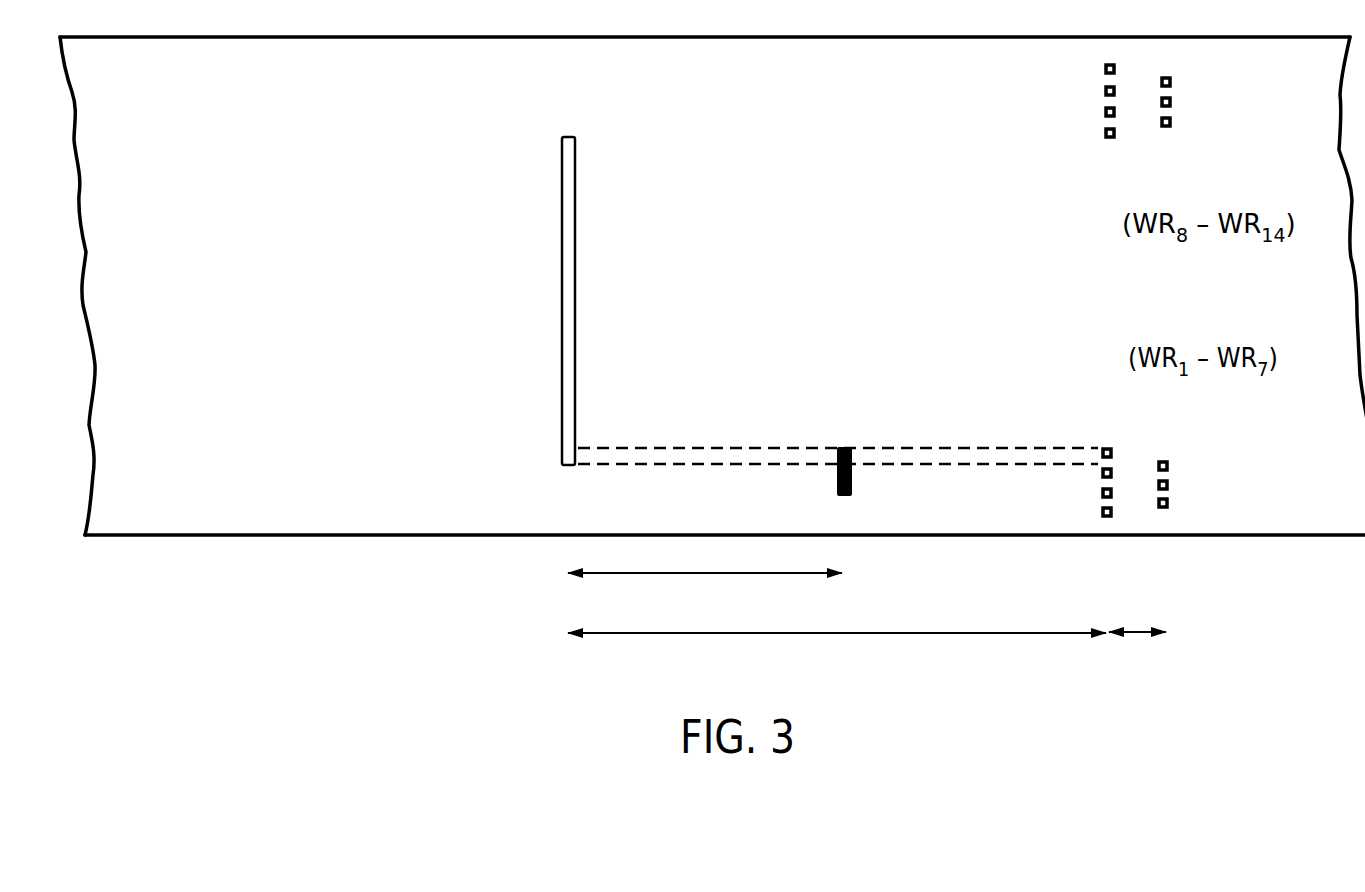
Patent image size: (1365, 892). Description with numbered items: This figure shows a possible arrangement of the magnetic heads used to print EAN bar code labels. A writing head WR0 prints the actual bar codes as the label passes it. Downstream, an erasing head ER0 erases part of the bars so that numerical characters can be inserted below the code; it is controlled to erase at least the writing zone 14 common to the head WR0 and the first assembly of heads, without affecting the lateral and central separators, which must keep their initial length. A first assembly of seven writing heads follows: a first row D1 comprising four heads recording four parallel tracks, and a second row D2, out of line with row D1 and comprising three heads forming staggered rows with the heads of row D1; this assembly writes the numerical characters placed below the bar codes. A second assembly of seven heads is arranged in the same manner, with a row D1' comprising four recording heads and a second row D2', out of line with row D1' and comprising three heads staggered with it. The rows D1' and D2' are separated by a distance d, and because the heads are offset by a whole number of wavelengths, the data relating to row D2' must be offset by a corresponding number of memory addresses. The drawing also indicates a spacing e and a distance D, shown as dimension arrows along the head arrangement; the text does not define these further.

The writing head WR0 is at (586, 288).
The writing zone 14 is at (704, 461).
The erasing head ER0 is at (867, 454).
The first row D1 is at (1059, 451).
The second row D2 is at (1210, 455).
The row D1' is at (1072, 143).
The second row D2' is at (1211, 127).
The distance e between write and read element e is at (705, 555).
The distance D from write element to detectors D is at (837, 652).
The distance d is at (1137, 654).